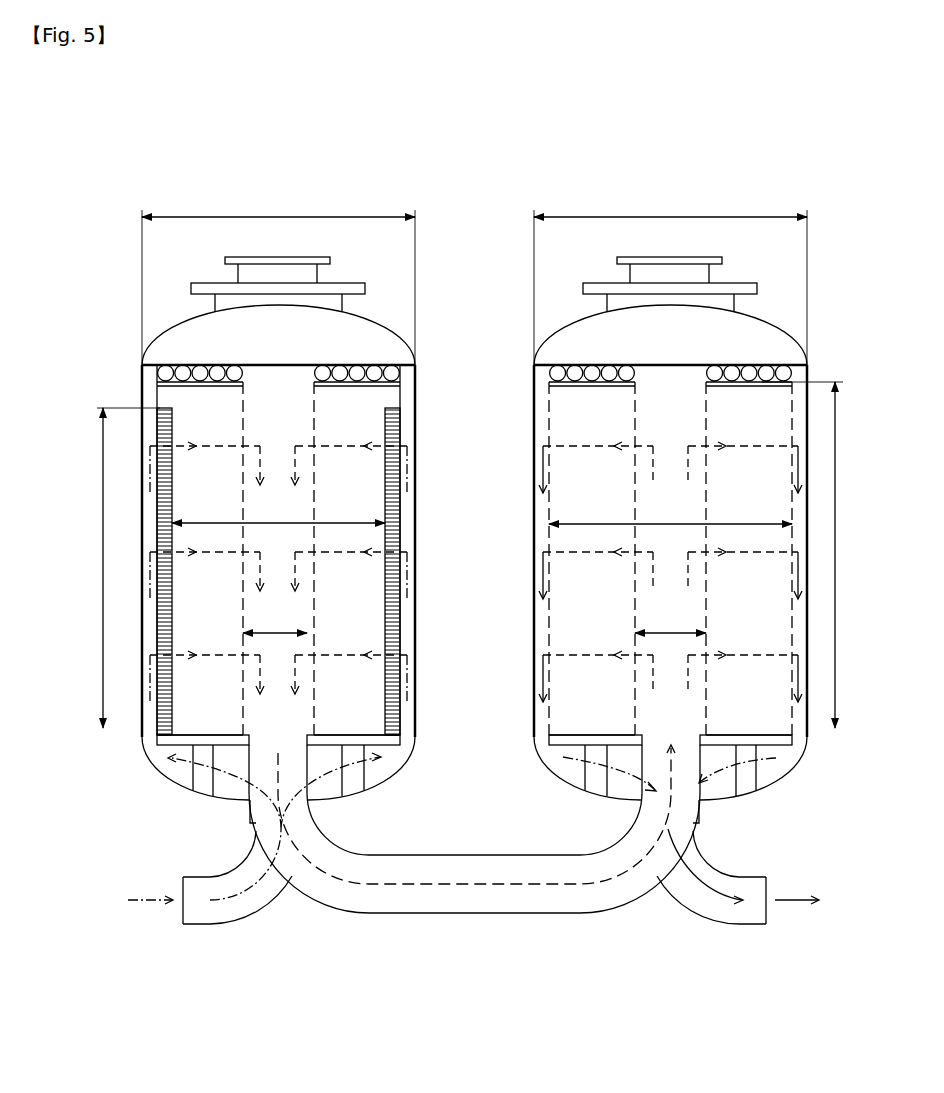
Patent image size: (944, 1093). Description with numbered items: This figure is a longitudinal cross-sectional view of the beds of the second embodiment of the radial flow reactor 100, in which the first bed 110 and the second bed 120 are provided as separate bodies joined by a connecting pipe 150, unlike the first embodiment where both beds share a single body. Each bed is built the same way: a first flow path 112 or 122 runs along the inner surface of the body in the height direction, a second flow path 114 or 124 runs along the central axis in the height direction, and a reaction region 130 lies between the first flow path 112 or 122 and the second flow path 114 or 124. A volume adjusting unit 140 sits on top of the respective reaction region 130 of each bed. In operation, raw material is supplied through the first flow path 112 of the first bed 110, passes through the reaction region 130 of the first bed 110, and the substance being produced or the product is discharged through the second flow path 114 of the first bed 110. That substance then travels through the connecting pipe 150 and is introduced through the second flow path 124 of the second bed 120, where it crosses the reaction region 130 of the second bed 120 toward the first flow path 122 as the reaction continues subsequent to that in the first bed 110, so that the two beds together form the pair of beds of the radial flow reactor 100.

The radial flow reactor 100 is at (110, 118).
The first bed 110 is at (155, 768).
The first flow path 112 is at (152, 718).
The second flow path 114 is at (257, 408).
The second bed 120 is at (795, 770).
The first flow path 122 is at (542, 416).
The second flow path 124 is at (670, 388).
The reaction region 130 is at (570, 722).
The volume adjusting unit 140 is at (574, 362).
The connecting pipe 150 is at (476, 856).